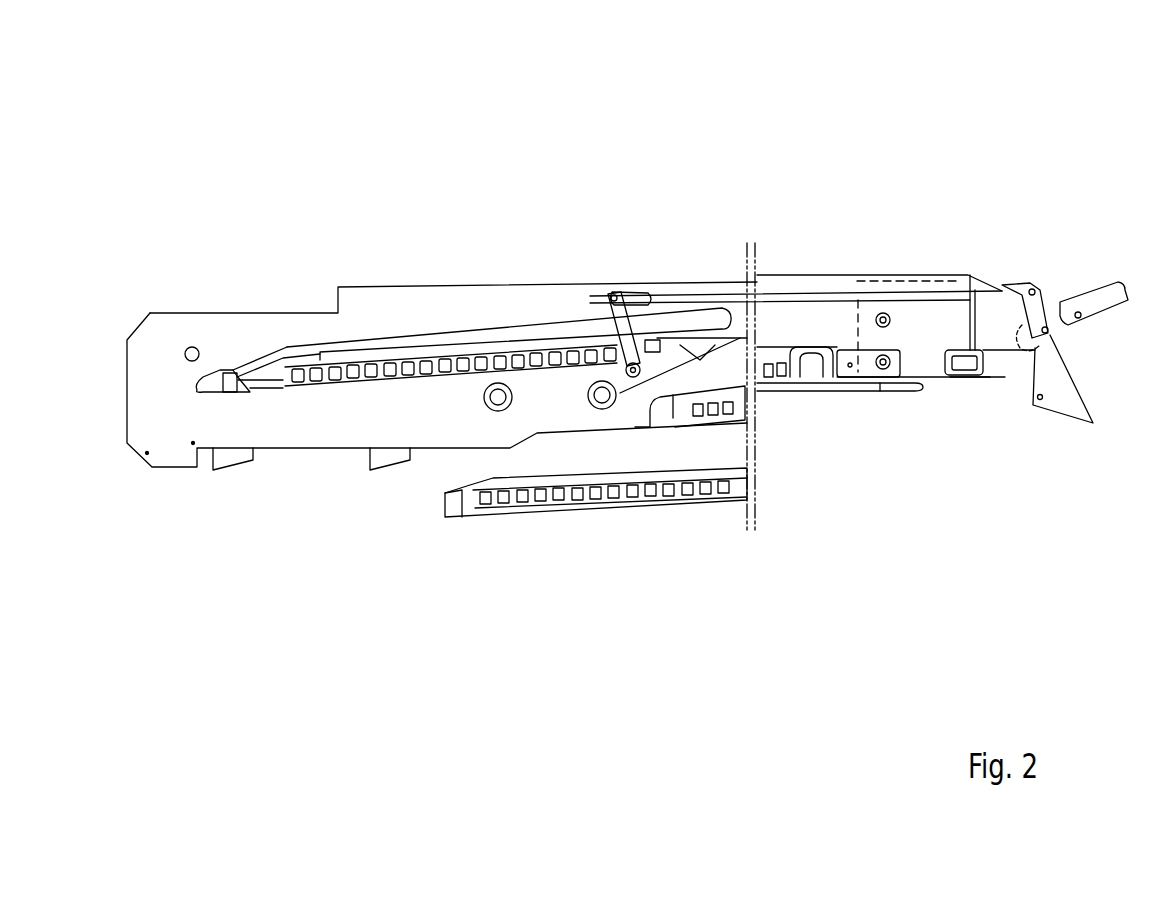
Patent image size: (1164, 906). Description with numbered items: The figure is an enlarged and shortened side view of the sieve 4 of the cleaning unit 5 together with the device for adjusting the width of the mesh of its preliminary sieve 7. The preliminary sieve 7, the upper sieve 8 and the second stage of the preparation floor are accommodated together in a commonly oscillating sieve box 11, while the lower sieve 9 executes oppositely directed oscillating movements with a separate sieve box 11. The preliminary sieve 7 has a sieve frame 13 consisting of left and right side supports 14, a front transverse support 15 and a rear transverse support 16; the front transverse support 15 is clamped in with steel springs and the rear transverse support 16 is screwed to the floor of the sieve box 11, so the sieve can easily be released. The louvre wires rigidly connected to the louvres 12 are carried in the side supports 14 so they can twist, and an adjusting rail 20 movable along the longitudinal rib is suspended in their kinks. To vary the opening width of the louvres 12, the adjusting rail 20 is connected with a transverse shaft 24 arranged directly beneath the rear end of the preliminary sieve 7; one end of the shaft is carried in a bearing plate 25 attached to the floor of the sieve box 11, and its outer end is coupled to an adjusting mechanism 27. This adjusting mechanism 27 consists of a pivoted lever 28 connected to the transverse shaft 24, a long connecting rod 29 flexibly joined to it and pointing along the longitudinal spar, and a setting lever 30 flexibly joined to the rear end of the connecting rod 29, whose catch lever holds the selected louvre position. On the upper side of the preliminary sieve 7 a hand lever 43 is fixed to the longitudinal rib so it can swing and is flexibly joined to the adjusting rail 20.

The sieve 4 is at (840, 541).
The cleaning unit 5 is at (768, 420).
The preliminary sieve 7 is at (454, 523).
The upper sieve 8 is at (787, 393).
The lower sieve 9 is at (618, 492).
The sieve box 11 is at (333, 412).
The louvres 12 is at (447, 368).
The sieve frame 13 is at (266, 520).
The side support 14 is at (258, 370).
The front transverse support 15 is at (228, 393).
The rear transverse support 16 is at (687, 423).
The adjusting rail 20 is at (538, 360).
The transverse shaft 24 is at (636, 372).
The bearing plate 25 is at (652, 340).
The adjusting mechanism 27 is at (848, 258).
The pivoted lever 28 is at (622, 300).
The connecting rod 29 is at (782, 294).
The setting lever 30 is at (1112, 297).
The hand lever 43 is at (718, 306).